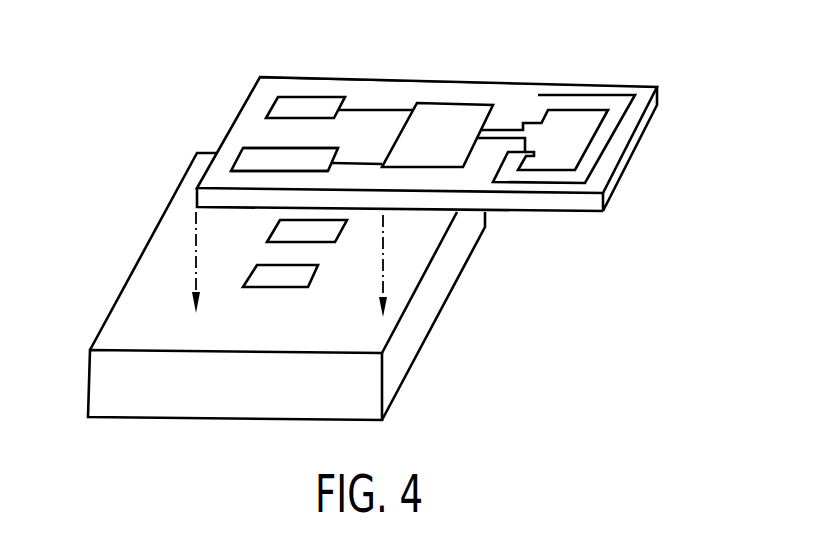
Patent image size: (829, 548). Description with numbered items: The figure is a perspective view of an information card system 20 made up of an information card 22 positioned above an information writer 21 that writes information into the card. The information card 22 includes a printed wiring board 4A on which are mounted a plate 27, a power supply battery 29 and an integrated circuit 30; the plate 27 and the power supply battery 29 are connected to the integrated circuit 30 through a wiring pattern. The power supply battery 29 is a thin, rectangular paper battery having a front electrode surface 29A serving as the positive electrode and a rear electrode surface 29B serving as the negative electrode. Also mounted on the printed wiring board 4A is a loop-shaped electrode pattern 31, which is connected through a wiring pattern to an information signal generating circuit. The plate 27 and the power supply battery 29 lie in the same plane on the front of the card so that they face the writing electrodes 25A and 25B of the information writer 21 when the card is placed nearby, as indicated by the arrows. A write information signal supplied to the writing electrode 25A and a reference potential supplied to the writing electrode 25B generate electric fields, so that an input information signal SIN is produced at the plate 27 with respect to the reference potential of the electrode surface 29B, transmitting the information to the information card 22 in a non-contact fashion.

The information card system 20 is at (112, 28).
The information writer 21 is at (422, 378).
The information card 22 is at (673, 92).
The printed wiring board 4A is at (515, 84).
The writing electrode 25A is at (274, 230).
The writing electrode 25B is at (316, 277).
The plate 27 is at (305, 97).
The power supply battery 29 is at (238, 152).
The front electrode surface 29A is at (246, 147).
The rear electrode surface 29B is at (232, 172).
The integrated circuit 30 is at (440, 103).
The loop-shaped electrode pattern 31 is at (593, 94).
The input information signal SIN is at (363, 112).